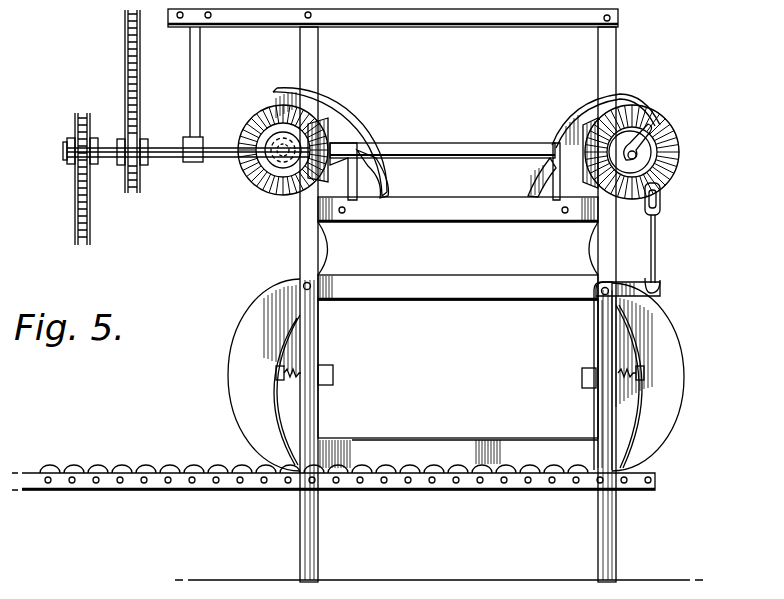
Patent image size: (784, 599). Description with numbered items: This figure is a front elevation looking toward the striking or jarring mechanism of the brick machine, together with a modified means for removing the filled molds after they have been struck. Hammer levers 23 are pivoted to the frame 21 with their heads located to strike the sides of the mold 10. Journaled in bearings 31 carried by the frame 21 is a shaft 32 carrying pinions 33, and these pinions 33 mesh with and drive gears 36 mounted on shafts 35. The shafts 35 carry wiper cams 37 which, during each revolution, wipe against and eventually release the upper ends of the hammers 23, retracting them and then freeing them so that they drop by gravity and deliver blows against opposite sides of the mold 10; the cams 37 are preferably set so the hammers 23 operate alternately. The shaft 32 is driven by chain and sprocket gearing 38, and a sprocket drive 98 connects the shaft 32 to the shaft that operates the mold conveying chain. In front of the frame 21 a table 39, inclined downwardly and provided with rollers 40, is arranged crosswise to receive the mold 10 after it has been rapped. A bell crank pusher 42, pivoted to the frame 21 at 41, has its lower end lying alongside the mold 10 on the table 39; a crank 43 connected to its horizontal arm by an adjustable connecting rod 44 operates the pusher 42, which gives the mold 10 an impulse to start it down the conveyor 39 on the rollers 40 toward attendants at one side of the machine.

The mold 10 is at (452, 447).
The frame 21 is at (318, 70).
The hammer levers 23 is at (330, 255).
The bearings 31 is at (380, 177).
The shaft 32 is at (442, 141).
The pinions 33 is at (330, 140).
The shafts 35 is at (275, 192).
The gears 36 is at (663, 170).
The wiper cams 37 is at (350, 118).
The chain and sprocket gearing 38 is at (147, 108).
The table 39 is at (266, 492).
The rollers 40 is at (228, 472).
The pivot 41 is at (615, 290).
The bell crank pusher 42 is at (596, 350).
The crank 43 is at (660, 130).
The adjustable connecting rod 44 is at (650, 236).
The sprocket drive 98 is at (75, 207).